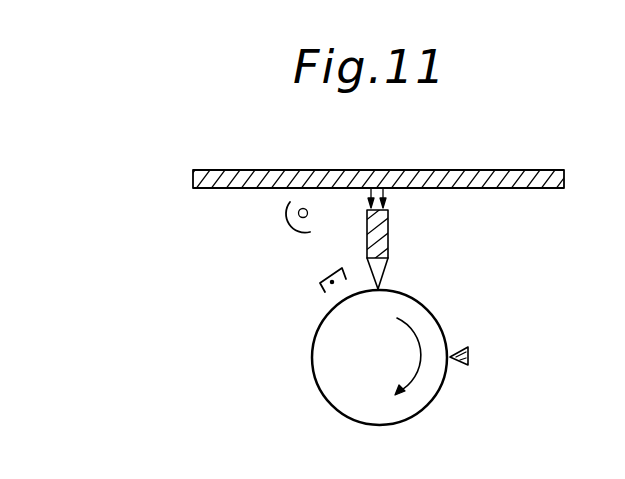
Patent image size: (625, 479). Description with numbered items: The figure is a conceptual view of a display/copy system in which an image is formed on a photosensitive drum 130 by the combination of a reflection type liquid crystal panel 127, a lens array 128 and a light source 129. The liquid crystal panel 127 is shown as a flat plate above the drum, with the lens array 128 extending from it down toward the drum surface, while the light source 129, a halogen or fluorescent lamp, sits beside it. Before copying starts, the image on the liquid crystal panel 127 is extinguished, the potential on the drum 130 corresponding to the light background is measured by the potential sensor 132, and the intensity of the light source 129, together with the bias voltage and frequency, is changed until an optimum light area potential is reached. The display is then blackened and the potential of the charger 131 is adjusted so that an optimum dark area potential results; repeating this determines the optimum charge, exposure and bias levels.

The reflection type liquid crystal panel 127 is at (545, 176).
The lens array 128 is at (390, 230).
The light source 129 is at (283, 227).
The photosensitive drum 130 is at (437, 313).
The charger 131 is at (325, 274).
The potential sensor 132 is at (458, 368).